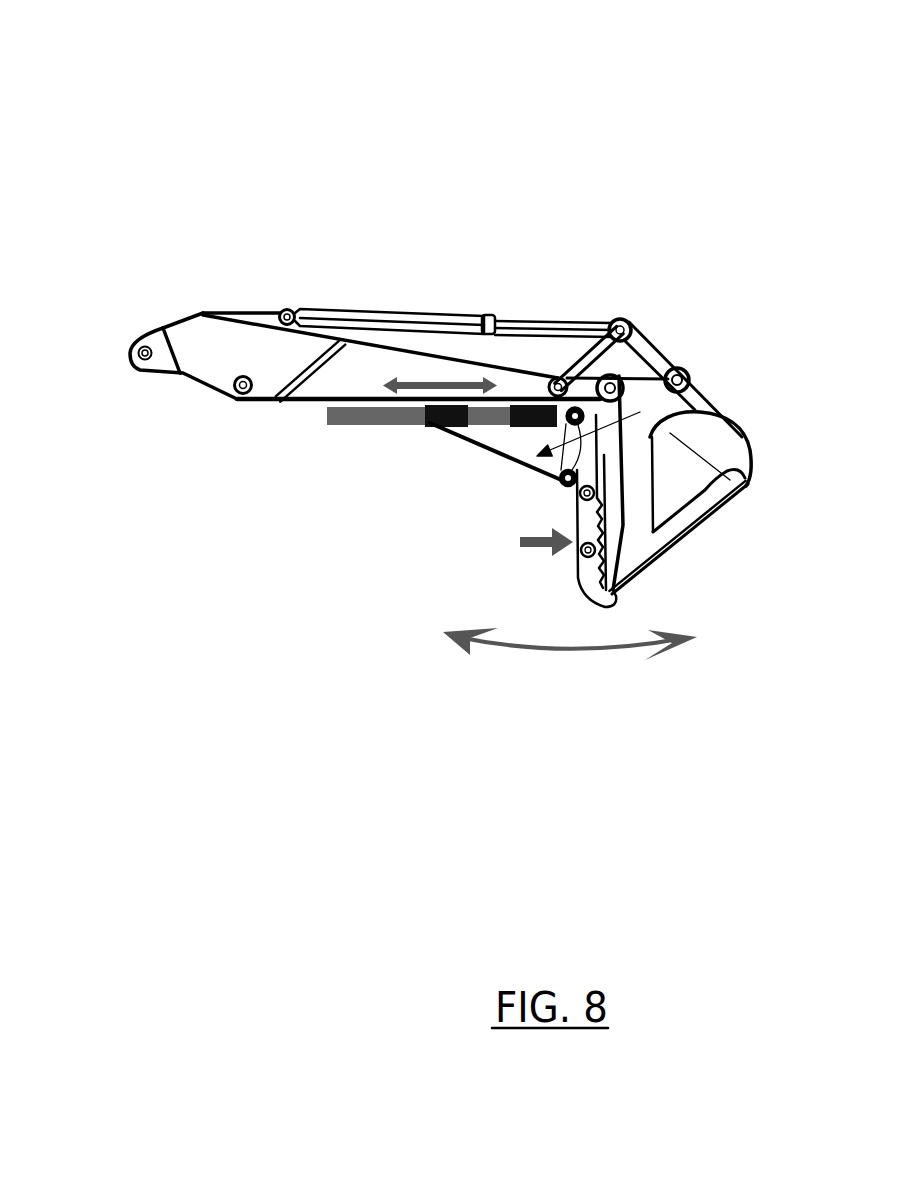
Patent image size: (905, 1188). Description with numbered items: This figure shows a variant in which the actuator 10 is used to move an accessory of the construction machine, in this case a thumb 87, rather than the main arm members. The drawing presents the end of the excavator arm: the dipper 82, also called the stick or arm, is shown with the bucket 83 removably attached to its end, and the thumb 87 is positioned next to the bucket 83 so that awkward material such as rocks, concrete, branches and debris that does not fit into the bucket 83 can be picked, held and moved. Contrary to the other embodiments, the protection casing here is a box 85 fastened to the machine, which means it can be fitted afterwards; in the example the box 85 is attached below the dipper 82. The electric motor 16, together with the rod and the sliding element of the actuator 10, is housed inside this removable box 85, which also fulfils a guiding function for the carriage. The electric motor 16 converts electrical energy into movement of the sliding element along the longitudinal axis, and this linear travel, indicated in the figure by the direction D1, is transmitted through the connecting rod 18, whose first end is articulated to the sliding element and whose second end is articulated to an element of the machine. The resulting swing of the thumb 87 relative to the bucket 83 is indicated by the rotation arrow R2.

The actuator 10 is at (416, 495).
The electric motor 16 is at (529, 398).
The connecting rod 18 is at (733, 480).
The dipper 82 is at (212, 362).
The bucket 83 is at (627, 553).
The box 85 is at (295, 398).
The thumb 87 is at (592, 574).
The direction of movement D1 is at (433, 378).
The rotation direction R2 is at (570, 680).